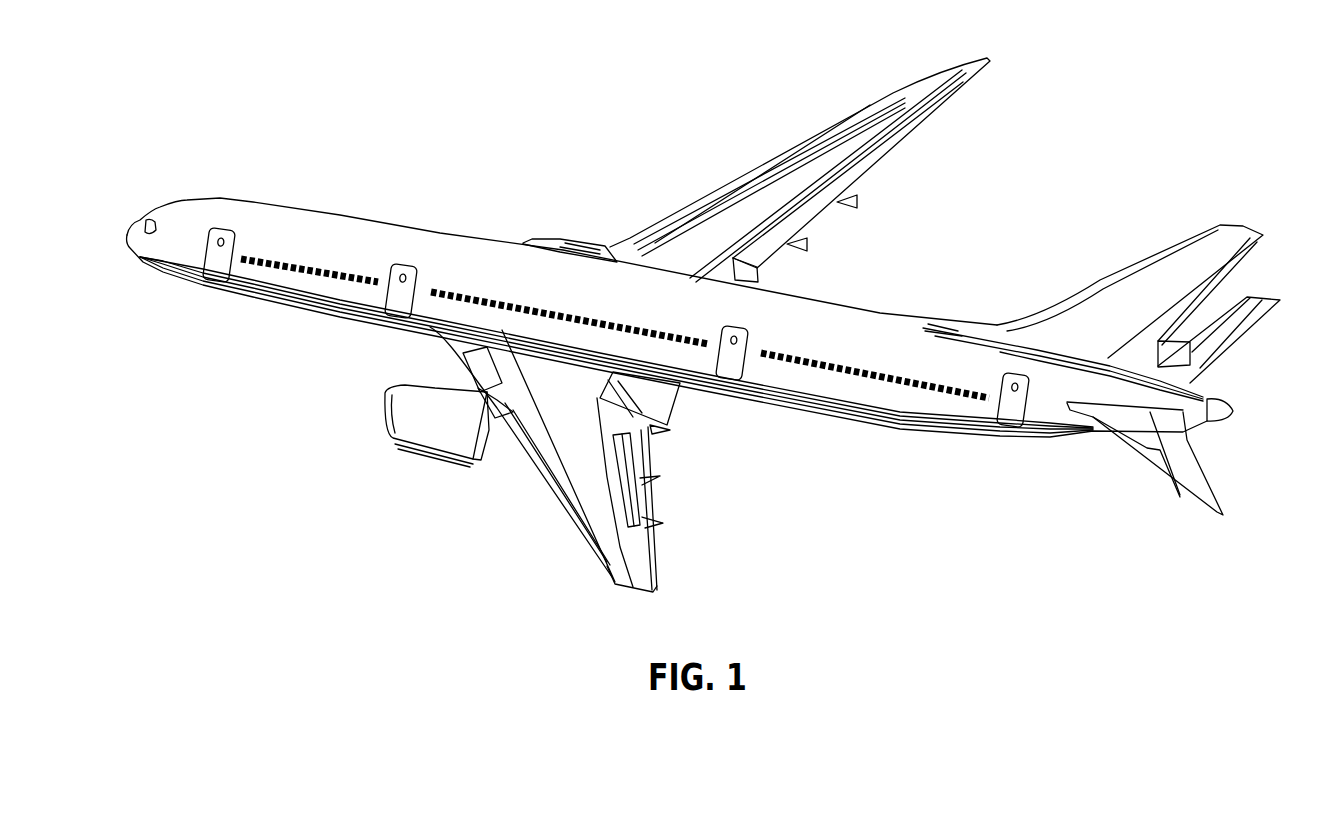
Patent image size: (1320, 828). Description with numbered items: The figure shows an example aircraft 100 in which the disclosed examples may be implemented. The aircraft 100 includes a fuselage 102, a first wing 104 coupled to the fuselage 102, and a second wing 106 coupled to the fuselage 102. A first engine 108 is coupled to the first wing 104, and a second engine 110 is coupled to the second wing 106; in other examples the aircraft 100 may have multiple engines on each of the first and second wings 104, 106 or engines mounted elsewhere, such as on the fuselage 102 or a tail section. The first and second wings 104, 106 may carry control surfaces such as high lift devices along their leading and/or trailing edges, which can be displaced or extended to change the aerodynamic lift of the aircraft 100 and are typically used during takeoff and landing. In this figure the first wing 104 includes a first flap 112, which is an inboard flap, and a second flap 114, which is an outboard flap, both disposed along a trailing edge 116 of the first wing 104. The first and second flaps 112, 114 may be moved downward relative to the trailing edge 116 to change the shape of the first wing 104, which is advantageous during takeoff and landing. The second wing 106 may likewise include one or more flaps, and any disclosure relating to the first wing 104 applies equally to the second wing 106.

The aircraft 100 is at (379, 88).
The fuselage 102 is at (398, 241).
The first wing 104 is at (588, 496).
The second wing 106 is at (700, 235).
The first engine 108 is at (438, 440).
The second engine 110 is at (547, 242).
The first flap 112 is at (653, 403).
The second flap 114 is at (633, 488).
The trailing edge 116 is at (653, 553).